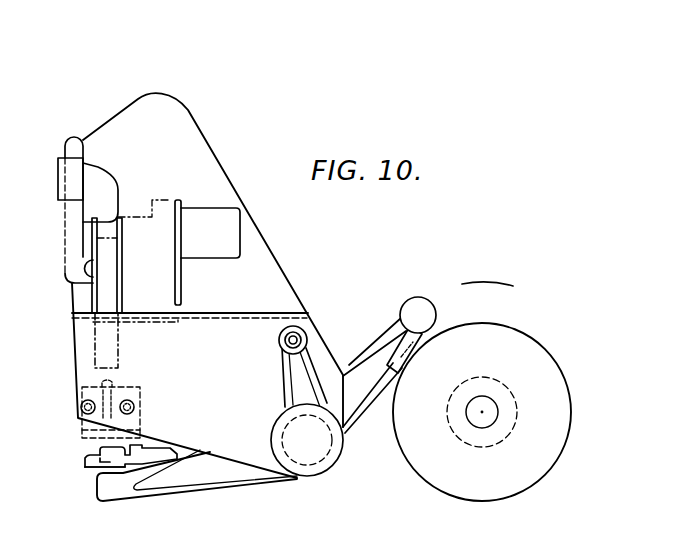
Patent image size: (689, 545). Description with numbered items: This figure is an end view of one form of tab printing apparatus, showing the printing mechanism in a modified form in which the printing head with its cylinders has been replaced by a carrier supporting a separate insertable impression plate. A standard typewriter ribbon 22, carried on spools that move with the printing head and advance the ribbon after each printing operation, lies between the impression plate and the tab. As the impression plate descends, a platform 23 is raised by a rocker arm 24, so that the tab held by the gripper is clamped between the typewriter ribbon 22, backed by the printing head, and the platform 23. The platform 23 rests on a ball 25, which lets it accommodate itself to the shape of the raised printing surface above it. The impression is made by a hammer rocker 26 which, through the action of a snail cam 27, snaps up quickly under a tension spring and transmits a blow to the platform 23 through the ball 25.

The typewriter ribbon 22 is at (100, 346).
The platform 23 is at (97, 450).
The rocker arm 24 is at (87, 462).
The ball 25 is at (85, 468).
The hammer rocker 26 is at (203, 478).
The snail cam 27 is at (533, 370).